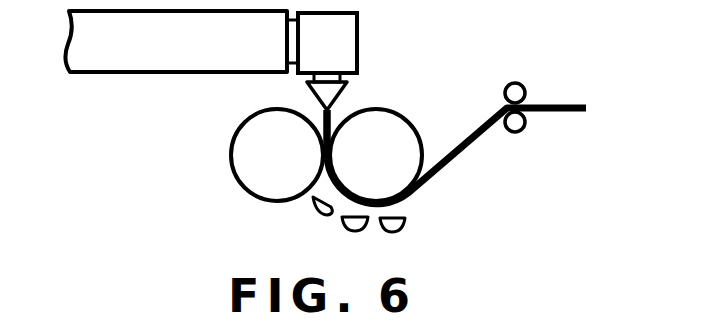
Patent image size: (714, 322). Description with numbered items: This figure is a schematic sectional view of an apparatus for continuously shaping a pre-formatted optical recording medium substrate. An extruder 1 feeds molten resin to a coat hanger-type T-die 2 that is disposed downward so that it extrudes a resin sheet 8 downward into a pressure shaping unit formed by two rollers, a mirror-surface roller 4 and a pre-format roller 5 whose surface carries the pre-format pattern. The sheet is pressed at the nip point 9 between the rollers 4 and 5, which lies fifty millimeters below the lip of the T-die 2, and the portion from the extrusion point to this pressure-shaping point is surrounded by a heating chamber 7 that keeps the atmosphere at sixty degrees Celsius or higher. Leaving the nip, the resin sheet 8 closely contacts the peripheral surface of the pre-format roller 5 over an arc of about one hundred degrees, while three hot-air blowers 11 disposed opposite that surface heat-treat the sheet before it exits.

The extruder 1 is at (118, 58).
The T-die 2 is at (325, 92).
The roller 4 is at (242, 173).
The pre-format roller 5 is at (403, 135).
The heating chamber 7 is at (517, 95).
The resin sheet 8 is at (570, 117).
The nip point 9 is at (332, 150).
The blowers 11 is at (313, 200).